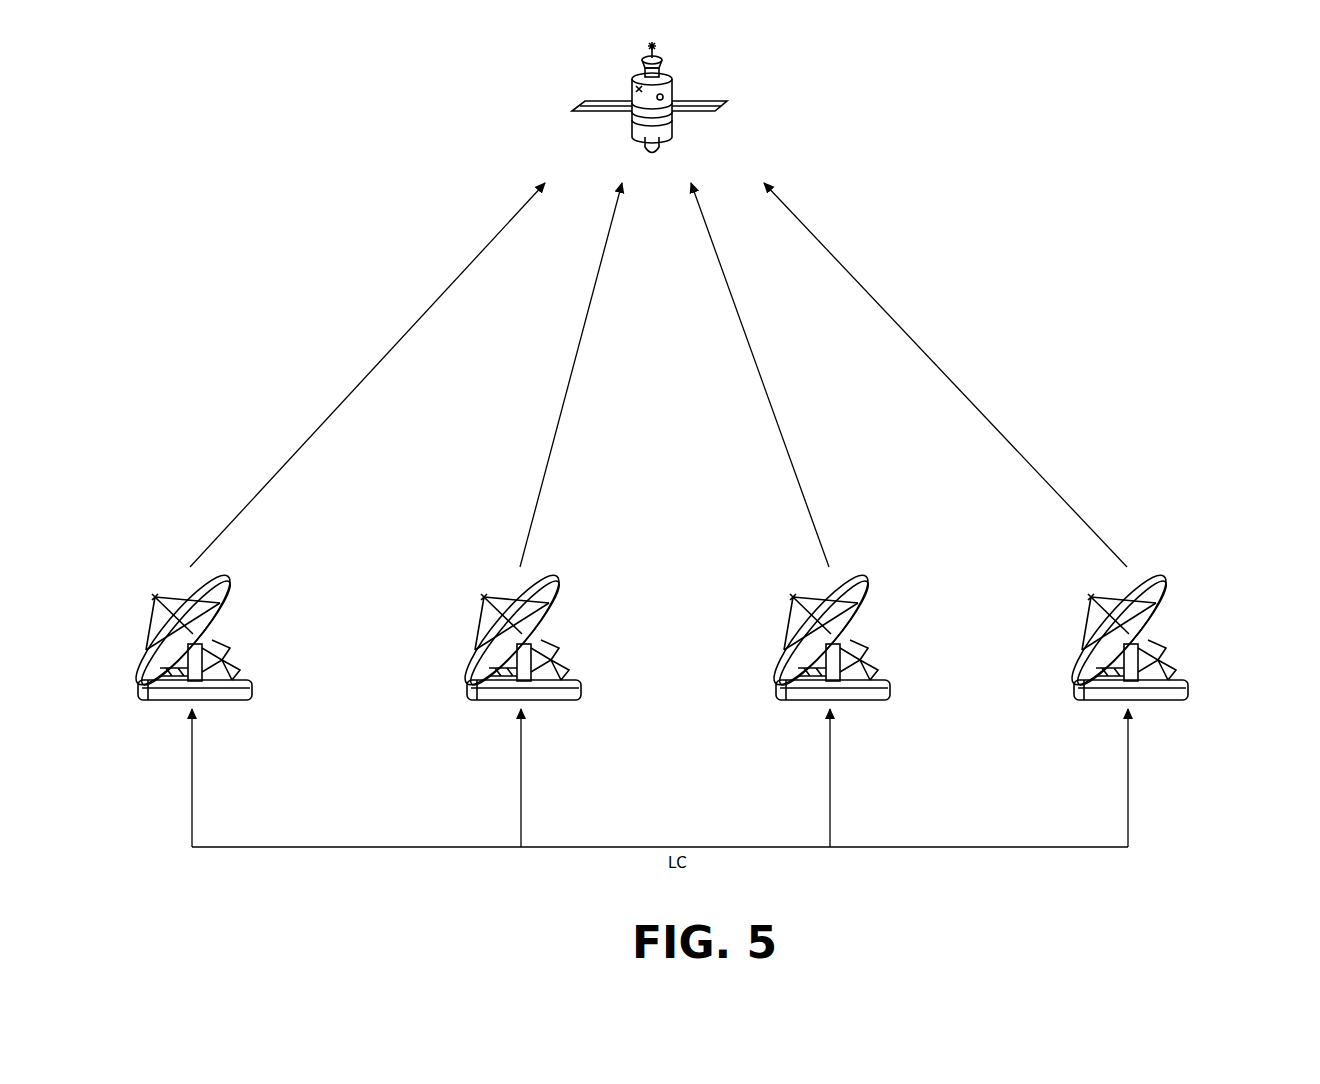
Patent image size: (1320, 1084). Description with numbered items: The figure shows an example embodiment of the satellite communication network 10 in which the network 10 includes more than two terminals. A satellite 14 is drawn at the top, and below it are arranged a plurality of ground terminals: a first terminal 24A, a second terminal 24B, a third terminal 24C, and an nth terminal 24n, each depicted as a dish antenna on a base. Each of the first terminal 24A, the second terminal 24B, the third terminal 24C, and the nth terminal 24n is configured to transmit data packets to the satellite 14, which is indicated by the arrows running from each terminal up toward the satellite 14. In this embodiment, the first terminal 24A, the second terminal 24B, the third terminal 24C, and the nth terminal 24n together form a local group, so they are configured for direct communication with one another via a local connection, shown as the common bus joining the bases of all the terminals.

The network 10 is at (1216, 128).
The satellite 14 is at (712, 112).
The first terminal 24A is at (227, 703).
The second terminal 24B is at (536, 706).
The third terminal 24C is at (845, 706).
The nth terminal 24n is at (1143, 706).